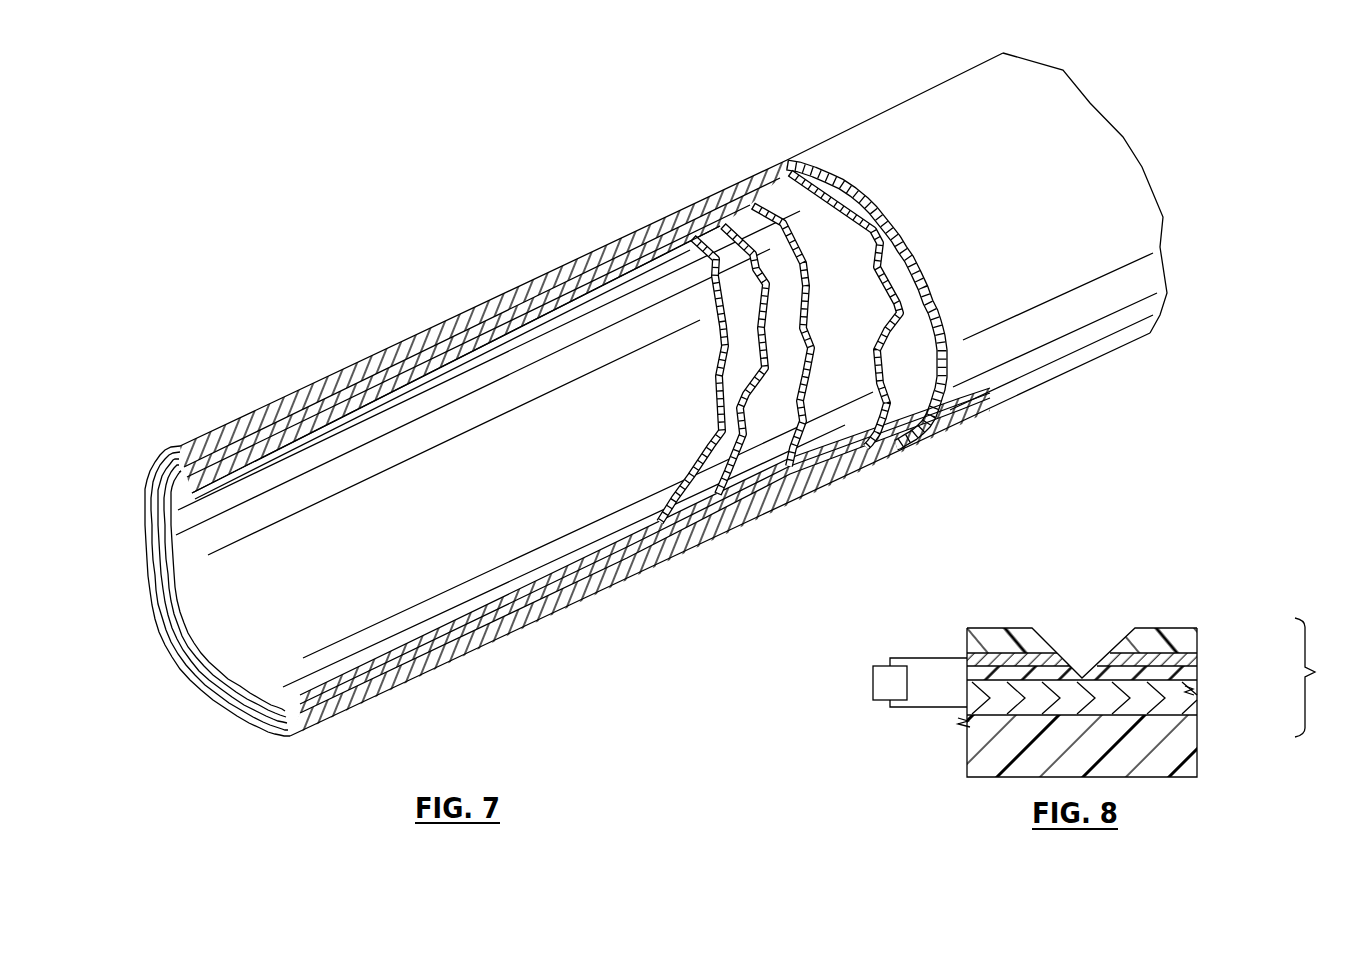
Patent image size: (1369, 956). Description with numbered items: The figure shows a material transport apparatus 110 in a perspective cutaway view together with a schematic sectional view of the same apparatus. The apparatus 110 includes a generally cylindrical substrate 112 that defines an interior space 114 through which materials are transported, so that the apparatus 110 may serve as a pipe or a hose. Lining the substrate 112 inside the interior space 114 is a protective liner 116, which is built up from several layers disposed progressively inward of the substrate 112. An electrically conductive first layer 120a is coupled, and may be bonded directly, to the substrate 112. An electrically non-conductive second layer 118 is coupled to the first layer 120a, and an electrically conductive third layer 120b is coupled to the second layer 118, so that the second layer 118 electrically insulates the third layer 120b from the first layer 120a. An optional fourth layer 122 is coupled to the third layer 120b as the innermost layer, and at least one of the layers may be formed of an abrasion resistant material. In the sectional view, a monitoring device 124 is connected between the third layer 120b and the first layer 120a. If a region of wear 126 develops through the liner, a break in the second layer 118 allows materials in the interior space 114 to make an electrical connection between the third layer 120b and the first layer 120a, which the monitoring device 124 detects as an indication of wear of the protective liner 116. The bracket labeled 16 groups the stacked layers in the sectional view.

In FIG. 7, the material transport apparatus 110 is at (410, 300).
In FIG. 7, the substrate 112 is at (915, 170).
In FIG. 8, the substrate 112 is at (1183, 747).
In FIG. 7, the interior space 114 is at (226, 636).
In FIG. 7, the protective liner 116 is at (941, 492).
In FIG. 7, the second layer 118 is at (822, 440).
In FIG. 8, the second layer 118 is at (1180, 673).
In FIG. 7, the first layer 120a is at (897, 407).
In FIG. 8, the first layer 120a is at (1180, 702).
In FIG. 7, the third layer 120b is at (747, 472).
In FIG. 8, the third layer 120b is at (1190, 660).
In FIG. 7, the fourth layer 122 is at (678, 508).
In FIG. 8, the fourth layer 122 is at (1195, 640).
In FIG. 8, the monitoring device 124 is at (880, 687).
In FIG. 8, the region of wear 126 is at (1086, 624).
In FIG. 8, the electrode layer stack 16 is at (1319, 677).